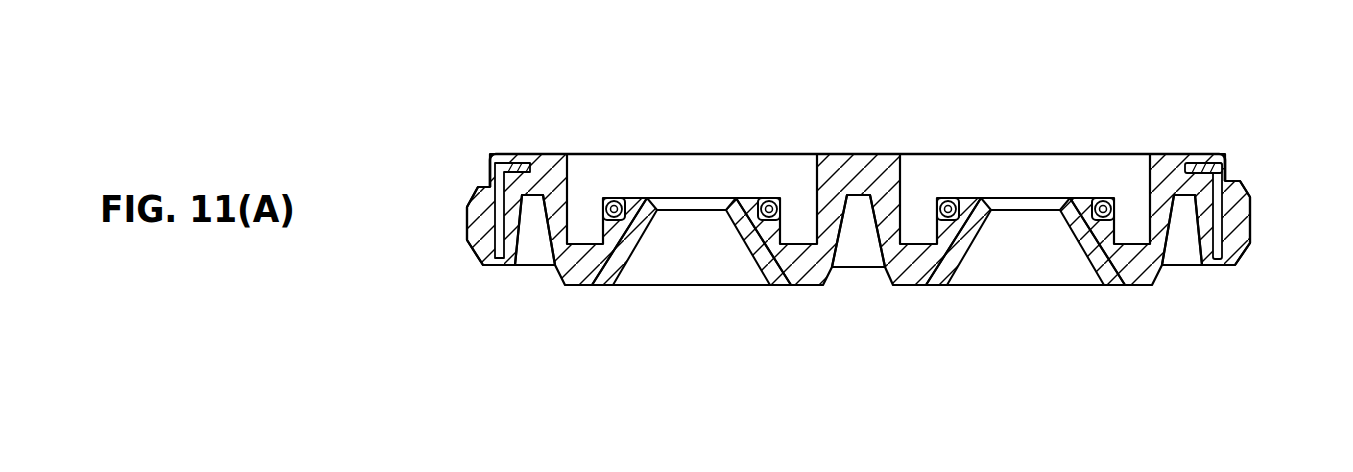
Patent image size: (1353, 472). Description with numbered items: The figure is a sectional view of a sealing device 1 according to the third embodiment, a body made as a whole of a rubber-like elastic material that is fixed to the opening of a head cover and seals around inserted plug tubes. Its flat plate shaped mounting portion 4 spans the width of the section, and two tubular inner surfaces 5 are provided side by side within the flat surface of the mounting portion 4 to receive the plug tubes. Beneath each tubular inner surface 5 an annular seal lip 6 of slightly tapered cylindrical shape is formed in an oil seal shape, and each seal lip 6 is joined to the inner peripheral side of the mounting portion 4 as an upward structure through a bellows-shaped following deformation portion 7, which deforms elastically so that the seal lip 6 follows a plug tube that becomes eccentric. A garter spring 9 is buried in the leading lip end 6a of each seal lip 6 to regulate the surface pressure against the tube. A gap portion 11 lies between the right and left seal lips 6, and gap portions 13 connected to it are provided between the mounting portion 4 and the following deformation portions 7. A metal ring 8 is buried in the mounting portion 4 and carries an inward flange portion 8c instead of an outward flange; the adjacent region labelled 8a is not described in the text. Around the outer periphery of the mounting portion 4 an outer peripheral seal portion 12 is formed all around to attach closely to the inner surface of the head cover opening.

The sealing device 1 is at (528, 135).
The mounting portion 4 is at (854, 154).
The tubular inner surface 5 is at (581, 160).
The seal lip 6 is at (617, 250).
The lip end 6a is at (644, 214).
The following deformation portion 7 is at (556, 248).
The metal ring 8 is at (490, 182).
The plate outer flange 8a is at (1232, 232).
The inward flange portion 8c is at (1200, 165).
The garter spring 9 is at (767, 198).
The gap portion 11 is at (855, 268).
The outer peripheral seal portion 12 is at (476, 222).
The gap portion 13 is at (527, 255).